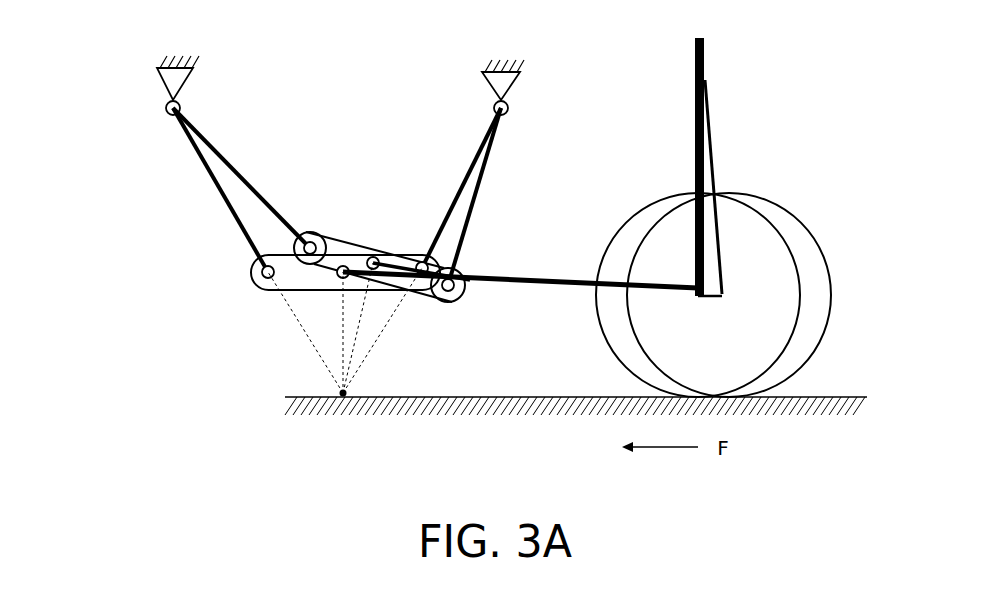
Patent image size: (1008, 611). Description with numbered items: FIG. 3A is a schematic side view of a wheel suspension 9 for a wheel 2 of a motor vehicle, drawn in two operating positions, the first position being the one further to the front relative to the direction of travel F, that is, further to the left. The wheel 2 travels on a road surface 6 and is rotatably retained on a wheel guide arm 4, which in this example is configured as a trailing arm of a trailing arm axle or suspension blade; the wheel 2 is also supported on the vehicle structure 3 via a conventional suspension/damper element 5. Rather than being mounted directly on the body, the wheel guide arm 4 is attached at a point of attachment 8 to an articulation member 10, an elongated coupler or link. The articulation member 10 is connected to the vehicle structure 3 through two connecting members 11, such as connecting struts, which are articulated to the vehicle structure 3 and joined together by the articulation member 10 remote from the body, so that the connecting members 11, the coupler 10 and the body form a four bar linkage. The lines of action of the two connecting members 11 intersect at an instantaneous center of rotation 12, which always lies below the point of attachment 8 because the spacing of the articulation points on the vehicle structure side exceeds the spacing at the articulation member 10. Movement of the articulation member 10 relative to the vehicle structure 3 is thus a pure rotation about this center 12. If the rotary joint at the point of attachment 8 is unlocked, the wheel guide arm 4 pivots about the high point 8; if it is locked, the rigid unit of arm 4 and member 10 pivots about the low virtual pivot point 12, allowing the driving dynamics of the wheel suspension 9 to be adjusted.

The wheel 2 is at (753, 230).
The vehicle structure 3 is at (197, 60).
The wheel guide arm 4 is at (510, 270).
The suspension/damper element 5 is at (710, 113).
The road surface 6 is at (827, 397).
The point of attachment 8 is at (332, 285).
The wheel suspension 9 is at (128, 182).
The articulation member 10 is at (333, 248).
The connecting members 11 is at (242, 183).
The instantaneous center of rotation 12 is at (353, 392).